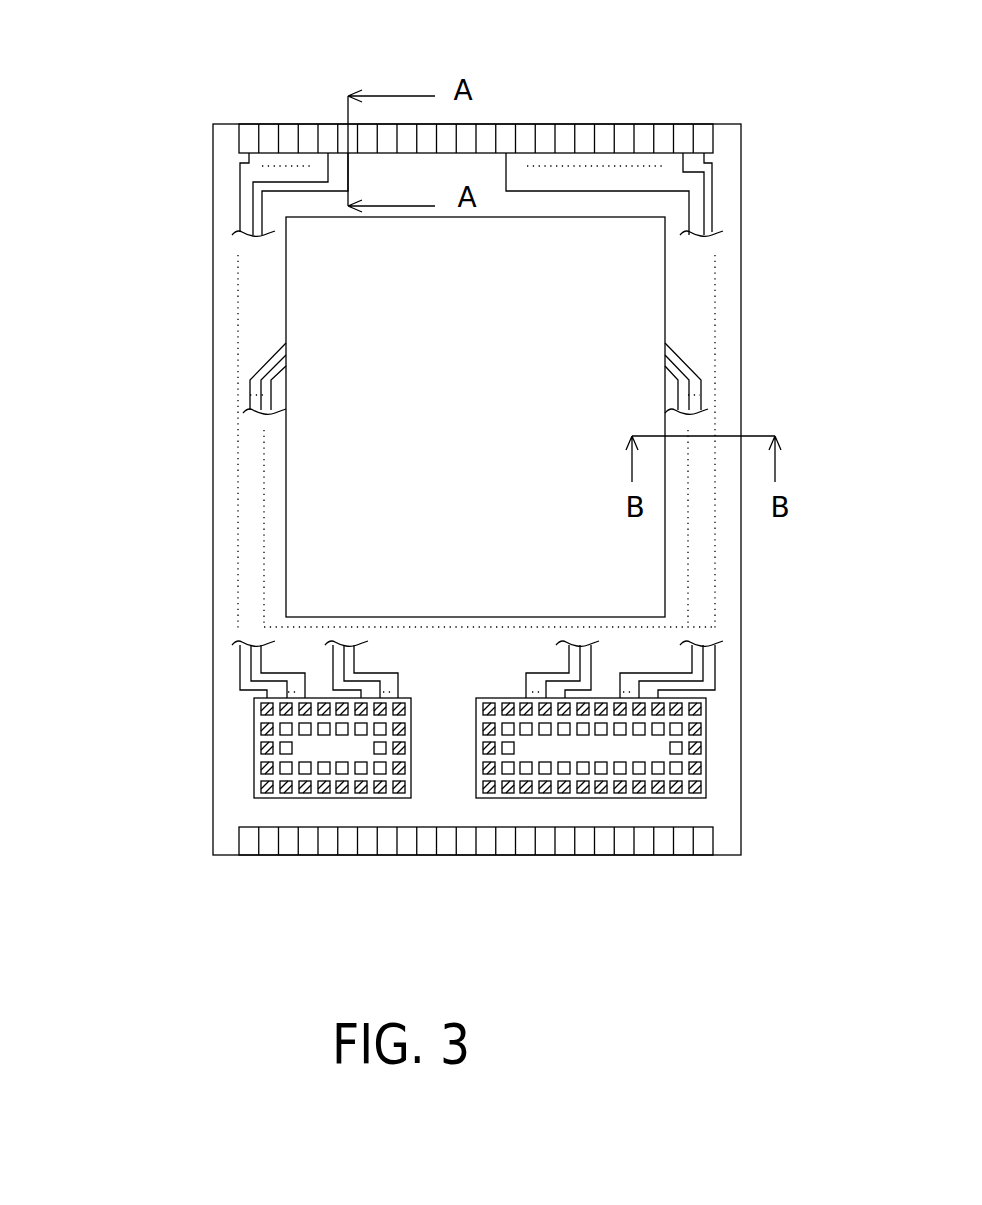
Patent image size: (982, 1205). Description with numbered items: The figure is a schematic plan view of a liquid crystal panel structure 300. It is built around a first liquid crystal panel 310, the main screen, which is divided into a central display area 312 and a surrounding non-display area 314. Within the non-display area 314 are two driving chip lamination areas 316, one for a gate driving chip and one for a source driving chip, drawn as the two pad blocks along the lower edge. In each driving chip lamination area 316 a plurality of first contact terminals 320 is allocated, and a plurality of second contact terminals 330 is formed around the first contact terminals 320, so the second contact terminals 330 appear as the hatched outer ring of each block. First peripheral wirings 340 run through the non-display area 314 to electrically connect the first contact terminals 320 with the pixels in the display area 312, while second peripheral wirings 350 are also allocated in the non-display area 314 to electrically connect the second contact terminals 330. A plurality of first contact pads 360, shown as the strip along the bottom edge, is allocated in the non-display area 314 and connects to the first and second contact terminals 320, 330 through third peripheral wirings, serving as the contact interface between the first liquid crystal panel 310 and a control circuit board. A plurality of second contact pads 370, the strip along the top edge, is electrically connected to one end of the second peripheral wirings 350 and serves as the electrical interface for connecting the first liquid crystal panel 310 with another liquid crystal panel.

The liquid crystal panel structure 300 is at (777, 937).
The first liquid crystal panel 310 is at (182, 484).
The display area 312 is at (645, 553).
The non-display area 314 is at (712, 296).
The driving chip lamination area 316 is at (252, 785).
The first contact terminals 320 is at (273, 746).
The second contact terminals 330 is at (262, 710).
The first peripheral wirings 340 is at (250, 395).
The second peripheral wirings 350 is at (240, 197).
The first contact pads 360 is at (507, 845).
The second contact pads 370 is at (640, 132).